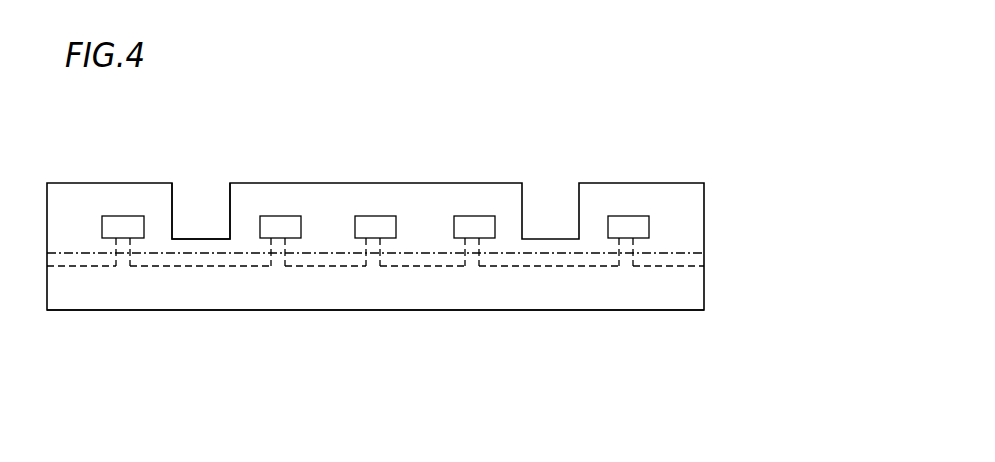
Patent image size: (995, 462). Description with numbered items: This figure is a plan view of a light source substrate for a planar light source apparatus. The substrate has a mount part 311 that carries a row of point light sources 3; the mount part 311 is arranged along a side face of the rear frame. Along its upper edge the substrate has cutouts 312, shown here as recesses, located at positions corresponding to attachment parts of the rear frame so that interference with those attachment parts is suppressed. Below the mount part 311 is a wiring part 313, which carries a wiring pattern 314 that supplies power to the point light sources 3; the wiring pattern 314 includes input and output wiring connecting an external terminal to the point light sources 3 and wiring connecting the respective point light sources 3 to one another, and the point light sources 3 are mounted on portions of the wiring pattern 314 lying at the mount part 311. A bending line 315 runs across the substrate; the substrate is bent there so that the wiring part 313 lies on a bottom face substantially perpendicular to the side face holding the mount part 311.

The point light source 3 is at (374, 228).
The mount part 311 is at (588, 200).
The cutout 312 is at (203, 209).
The wiring part 313 is at (412, 293).
The wiring pattern 314 is at (183, 267).
The bending line 315 is at (720, 259).